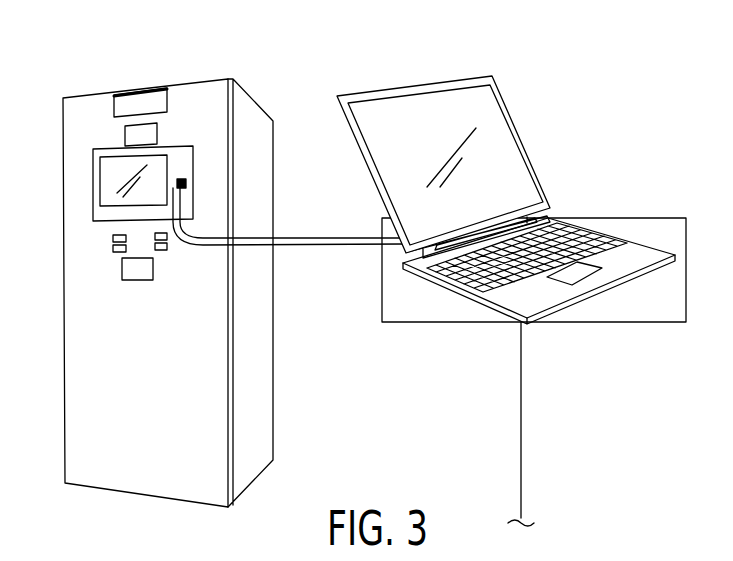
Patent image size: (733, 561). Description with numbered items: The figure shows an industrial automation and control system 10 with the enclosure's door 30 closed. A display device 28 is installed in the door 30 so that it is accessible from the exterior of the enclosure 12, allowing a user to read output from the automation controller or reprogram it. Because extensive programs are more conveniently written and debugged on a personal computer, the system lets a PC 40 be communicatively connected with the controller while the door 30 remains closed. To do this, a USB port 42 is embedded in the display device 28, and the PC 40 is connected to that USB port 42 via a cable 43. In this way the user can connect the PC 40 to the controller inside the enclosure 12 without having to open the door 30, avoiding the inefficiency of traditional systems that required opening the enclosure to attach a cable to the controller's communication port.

The system 10 is at (622, 53).
The enclosure 12 is at (98, 88).
The door 30 is at (203, 93).
The display device 28 is at (97, 182).
The USB port 42 is at (187, 183).
The cable 43 is at (317, 246).
The PC 40 is at (525, 142).